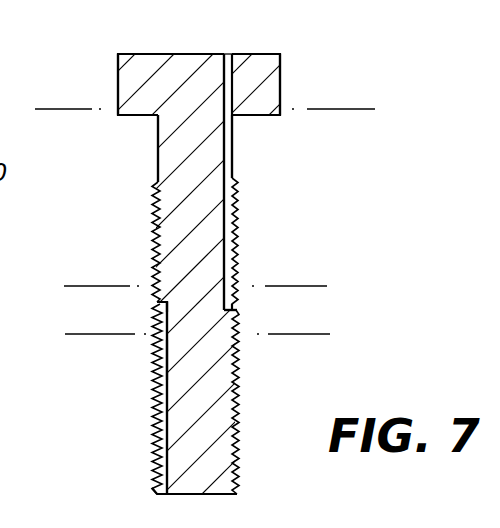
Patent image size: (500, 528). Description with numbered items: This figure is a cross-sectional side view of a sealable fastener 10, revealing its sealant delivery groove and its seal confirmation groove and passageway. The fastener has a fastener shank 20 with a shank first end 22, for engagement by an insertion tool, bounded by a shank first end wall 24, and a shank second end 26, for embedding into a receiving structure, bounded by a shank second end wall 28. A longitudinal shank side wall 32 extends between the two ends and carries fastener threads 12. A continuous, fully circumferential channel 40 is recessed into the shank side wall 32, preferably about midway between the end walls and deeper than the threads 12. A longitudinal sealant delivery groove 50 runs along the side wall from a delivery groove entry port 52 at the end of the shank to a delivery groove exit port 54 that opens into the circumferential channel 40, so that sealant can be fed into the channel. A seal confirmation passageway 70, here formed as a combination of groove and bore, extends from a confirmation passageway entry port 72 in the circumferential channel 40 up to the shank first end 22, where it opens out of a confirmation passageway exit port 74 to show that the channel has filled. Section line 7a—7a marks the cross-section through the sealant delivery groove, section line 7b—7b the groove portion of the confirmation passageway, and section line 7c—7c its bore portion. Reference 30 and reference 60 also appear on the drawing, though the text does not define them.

The sealable fastener 10 is at (84, 248).
The fastener threads 12 is at (241, 428).
The fastener shank 20 is at (158, 152).
The shank first end 22 is at (118, 58).
The shank first end wall 24 is at (270, 56).
The shank second end 26 is at (156, 478).
The shank second end wall 28 is at (186, 494).
The end portion 30 is at (150, 511).
The shank side wall 32 is at (152, 232).
The circumferential channel 40 is at (238, 308).
The sealant delivery groove 50 is at (167, 357).
The delivery groove entry port 52 is at (158, 496).
The delivery groove exit port 54 is at (162, 308).
The head underside 60 is at (118, 100).
The seal confirmation passageway 70 is at (224, 72).
The confirmation passageway entry port 72 is at (236, 292).
The confirmation passageway exit port 74 is at (228, 54).
The section line 7a— 7a is at (193, 336).
The section line 7b— 7b is at (192, 291).
The section line 7c— 7c is at (205, 110).